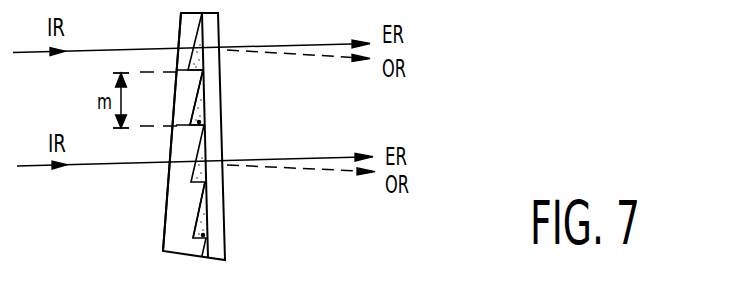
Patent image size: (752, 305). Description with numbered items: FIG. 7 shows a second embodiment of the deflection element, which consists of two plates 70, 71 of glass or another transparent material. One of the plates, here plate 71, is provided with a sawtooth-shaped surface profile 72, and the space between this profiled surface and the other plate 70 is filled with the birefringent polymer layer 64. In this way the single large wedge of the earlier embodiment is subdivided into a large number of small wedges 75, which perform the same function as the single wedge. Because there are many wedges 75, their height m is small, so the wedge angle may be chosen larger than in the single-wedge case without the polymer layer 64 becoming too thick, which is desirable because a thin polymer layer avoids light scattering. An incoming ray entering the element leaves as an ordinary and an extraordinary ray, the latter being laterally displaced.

The plate 70 is at (212, 28).
The plate 71 is at (185, 25).
The sawtooth-shaped surface profile 72 is at (186, 198).
The small wedges 75 is at (200, 97).
The birefringent polymer layer 64 is at (199, 122).